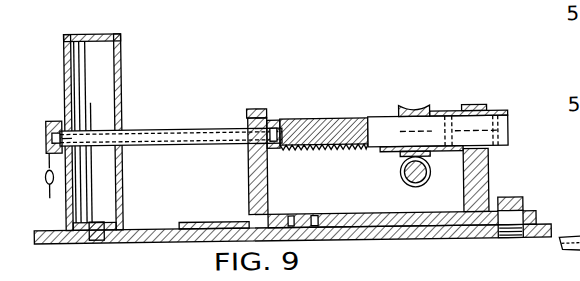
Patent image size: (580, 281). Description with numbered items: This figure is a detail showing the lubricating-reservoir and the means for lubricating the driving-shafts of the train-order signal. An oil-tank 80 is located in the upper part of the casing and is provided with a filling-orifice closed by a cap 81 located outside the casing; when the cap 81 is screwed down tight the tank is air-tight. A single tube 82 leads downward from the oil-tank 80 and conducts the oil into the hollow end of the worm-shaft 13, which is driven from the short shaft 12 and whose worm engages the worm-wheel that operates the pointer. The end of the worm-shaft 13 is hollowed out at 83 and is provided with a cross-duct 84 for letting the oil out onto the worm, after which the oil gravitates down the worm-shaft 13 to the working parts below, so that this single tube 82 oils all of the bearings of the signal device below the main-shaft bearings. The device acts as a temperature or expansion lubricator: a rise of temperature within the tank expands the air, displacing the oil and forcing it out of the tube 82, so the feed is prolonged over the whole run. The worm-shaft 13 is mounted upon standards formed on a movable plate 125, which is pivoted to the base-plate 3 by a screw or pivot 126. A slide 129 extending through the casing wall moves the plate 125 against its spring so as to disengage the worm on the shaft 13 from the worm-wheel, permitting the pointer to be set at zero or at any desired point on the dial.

The base-plate 3 is at (472, 241).
The short shaft 12 is at (401, 182).
The worm-shaft 13 is at (383, 123).
The oil-tank 80 is at (107, 89).
The cap 81 is at (46, 137).
The single tube 82 is at (207, 143).
The hollowed-out end of the worm-shaft 83 is at (278, 126).
The cross-duct 84 is at (283, 128).
The movable plate 125 is at (388, 199).
The screw or pivot 126 is at (508, 217).
The slide 129 is at (205, 212).